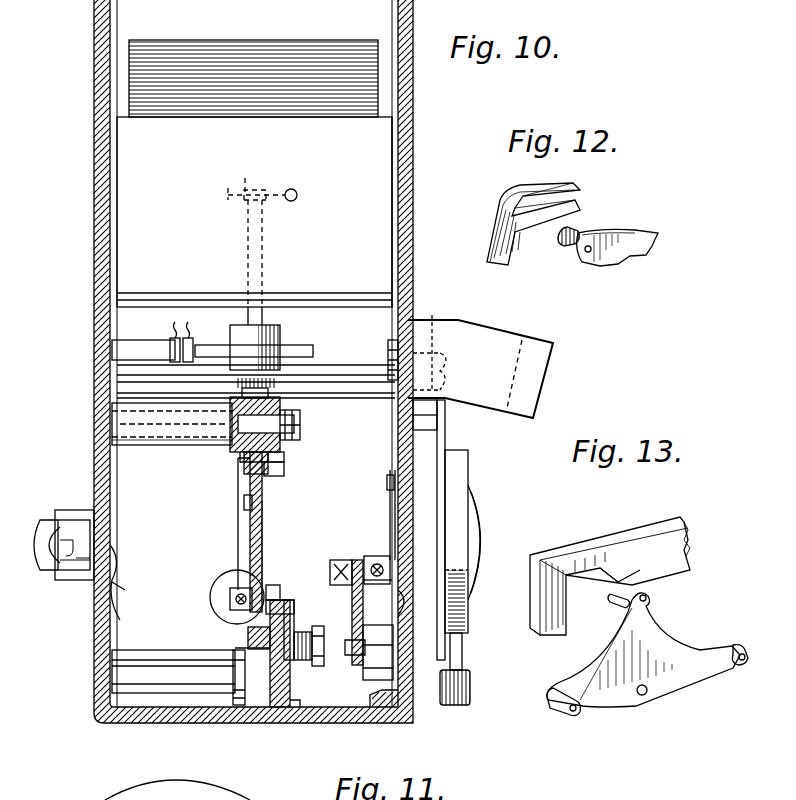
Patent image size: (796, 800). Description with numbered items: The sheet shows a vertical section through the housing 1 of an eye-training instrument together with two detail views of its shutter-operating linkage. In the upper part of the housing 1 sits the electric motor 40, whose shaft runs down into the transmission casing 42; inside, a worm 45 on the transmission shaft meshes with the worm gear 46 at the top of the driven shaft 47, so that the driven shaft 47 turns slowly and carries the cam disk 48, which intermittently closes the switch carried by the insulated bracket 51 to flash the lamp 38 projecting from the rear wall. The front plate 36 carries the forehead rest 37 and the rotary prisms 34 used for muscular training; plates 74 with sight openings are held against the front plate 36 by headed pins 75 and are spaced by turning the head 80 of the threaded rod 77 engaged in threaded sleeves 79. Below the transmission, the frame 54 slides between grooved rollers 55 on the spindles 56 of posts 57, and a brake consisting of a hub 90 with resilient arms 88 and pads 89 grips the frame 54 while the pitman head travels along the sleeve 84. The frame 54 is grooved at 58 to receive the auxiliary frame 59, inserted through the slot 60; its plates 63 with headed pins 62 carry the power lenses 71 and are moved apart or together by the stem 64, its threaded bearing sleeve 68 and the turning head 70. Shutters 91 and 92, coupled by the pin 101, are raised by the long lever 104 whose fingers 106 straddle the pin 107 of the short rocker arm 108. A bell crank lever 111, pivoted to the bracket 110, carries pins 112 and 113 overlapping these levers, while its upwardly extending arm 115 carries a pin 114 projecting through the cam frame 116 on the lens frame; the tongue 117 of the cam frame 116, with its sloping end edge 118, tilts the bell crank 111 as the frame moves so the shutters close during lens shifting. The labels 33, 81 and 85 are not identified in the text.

In FIG. 10, the housing 1 is at (94, 186).
In FIG. 10, the electric motor 40 is at (284, 49).
In FIG. 10, the transmission casing 42 is at (385, 166).
In FIG. 10, the front plate 36 is at (398, 223).
In FIG. 10, the worm gear 46 is at (256, 177).
In FIG. 10, the worm 45 is at (297, 190).
In FIG. 10, the driven shaft 47 is at (263, 276).
In FIG. 10, the cam disk 48 is at (304, 352).
In FIG. 10, the base plate 81 is at (350, 372).
In FIG. 10, the opening 33 is at (433, 322).
In FIG. 10, the forehead rest 37 is at (500, 331).
In FIG. 10, the posts 57 is at (148, 432).
In FIG. 10, the sleeve 84 is at (222, 406).
In FIG. 10, the spindles 56 is at (236, 427).
In FIG. 10, the hub or disk 90 is at (270, 396).
In FIG. 10, the bolt 85 is at (300, 428).
In FIG. 10, the resilient arms 88 is at (285, 453).
In FIG. 10, the pads 89 is at (275, 472).
In FIG. 10, the grooved rollers 55 is at (234, 451).
In FIG. 10, the frame 54 is at (240, 463).
In FIG. 10, the plates 63 is at (266, 585).
In FIG. 10, the headed pins 62 is at (244, 501).
In FIG. 10, the slot 60 is at (238, 521).
In FIG. 10, the power lenses 71 is at (263, 546).
In FIG. 10, the threaded bearing sleeve 68 is at (232, 578).
In FIG. 10, the turning head 70 is at (210, 598).
In FIG. 10, the stem 64 is at (240, 600).
In FIG. 10, the auxiliary frame 59 is at (248, 629).
In FIG. 10, the groove 58 is at (248, 650).
In FIG. 10, the cross arm 111 is at (282, 666).
In FIG. 13, the cross arm 111 is at (673, 673).
In FIG. 10, the pin 114 is at (275, 613).
In FIG. 13, the pin 114 is at (618, 604).
In FIG. 10, the cam frame 116 is at (273, 600).
In FIG. 13, the cam frame 116 is at (578, 558).
In FIG. 10, the pin 107 is at (303, 647).
In FIG. 12, the pin 107 is at (565, 246).
In FIG. 10, the rocker arm 108 is at (318, 652).
In FIG. 12, the rocker arm 108 is at (632, 258).
In FIG. 10, the bracket 110 is at (290, 708).
In FIG. 10, the shutter 91 is at (352, 592).
In FIG. 10, the shutter 92 is at (352, 613).
In FIG. 10, the pin 101 is at (369, 652).
In FIG. 10, the threaded sleeves 79 is at (385, 560).
In FIG. 10, the threaded rod 77 is at (373, 566).
In FIG. 10, the plates 74 is at (390, 500).
In FIG. 10, the headed pins 75 is at (388, 480).
In FIG. 10, the rotary prisms 34 is at (458, 512).
In FIG. 10, the turning head 80 is at (413, 568).
In FIG. 10, the lamp 38 is at (60, 579).
In FIG. 12, the lever 104 is at (490, 247).
In FIG. 12, the fingers 106 is at (572, 214).
In FIG. 13, the tongue 117 is at (690, 565).
In FIG. 13, the sloping end edge 118 is at (618, 582).
In FIG. 13, the upwardly extending arm 115 is at (657, 642).
In FIG. 13, the pin 113 is at (740, 650).
In FIG. 13, the pin 112 is at (568, 714).
In FIG. 11, the bracket 51 is at (42, 799).